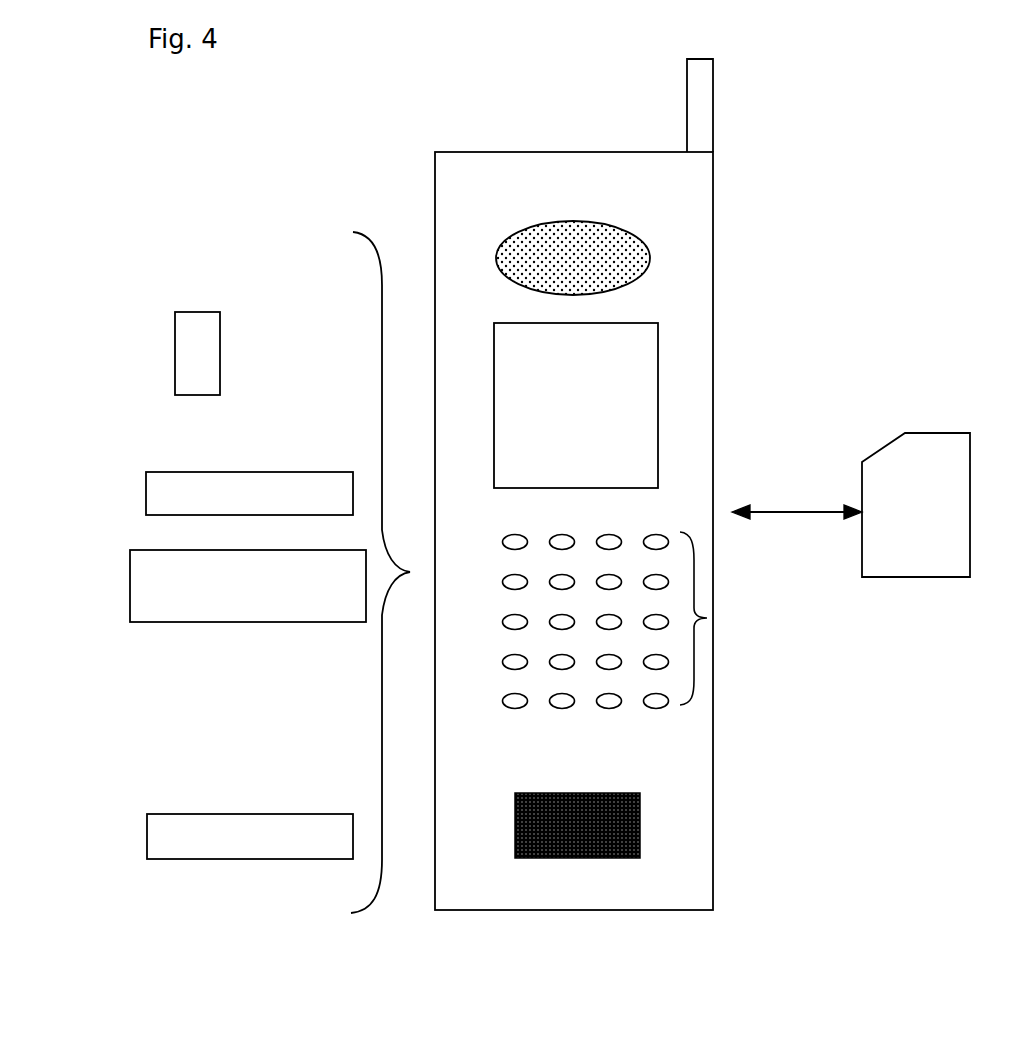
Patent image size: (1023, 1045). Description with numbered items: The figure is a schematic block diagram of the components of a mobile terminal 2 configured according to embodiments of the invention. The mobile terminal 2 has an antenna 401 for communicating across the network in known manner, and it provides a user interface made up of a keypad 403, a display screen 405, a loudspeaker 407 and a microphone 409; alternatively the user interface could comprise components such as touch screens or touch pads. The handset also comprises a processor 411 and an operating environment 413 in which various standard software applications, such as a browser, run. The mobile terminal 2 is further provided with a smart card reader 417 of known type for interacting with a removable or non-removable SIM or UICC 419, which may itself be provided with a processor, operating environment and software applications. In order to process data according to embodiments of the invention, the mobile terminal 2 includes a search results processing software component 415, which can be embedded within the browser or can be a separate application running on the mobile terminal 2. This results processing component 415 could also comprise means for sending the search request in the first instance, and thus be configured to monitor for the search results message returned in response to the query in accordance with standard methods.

The mobile terminal 2 is at (713, 205).
The antenna 401 is at (713, 99).
The keypad 403 is at (707, 618).
The display screen 405 is at (658, 346).
The loudspeaker 407 is at (650, 262).
The microphone 409 is at (645, 807).
The processor 411 is at (280, 468).
The operating environment 413 is at (293, 622).
The search results processing software component 415 is at (198, 312).
The smart card reader 417 is at (303, 859).
The SIM or UICC 419 is at (912, 577).